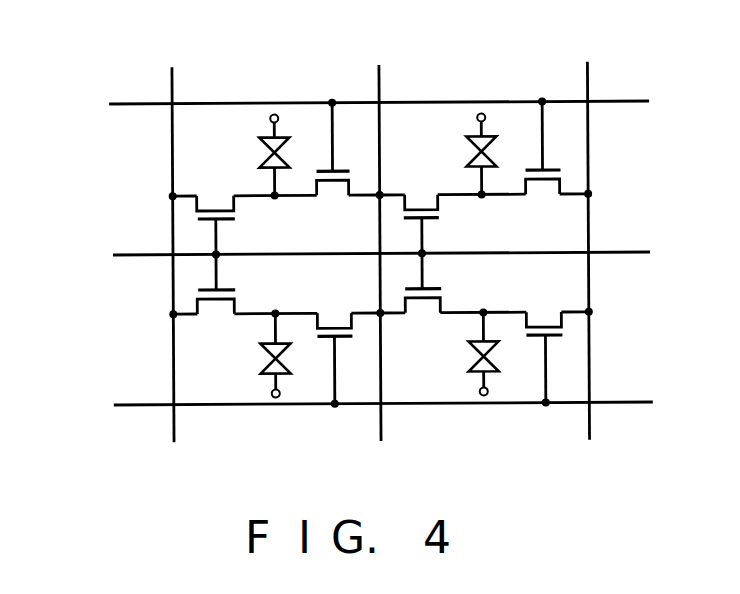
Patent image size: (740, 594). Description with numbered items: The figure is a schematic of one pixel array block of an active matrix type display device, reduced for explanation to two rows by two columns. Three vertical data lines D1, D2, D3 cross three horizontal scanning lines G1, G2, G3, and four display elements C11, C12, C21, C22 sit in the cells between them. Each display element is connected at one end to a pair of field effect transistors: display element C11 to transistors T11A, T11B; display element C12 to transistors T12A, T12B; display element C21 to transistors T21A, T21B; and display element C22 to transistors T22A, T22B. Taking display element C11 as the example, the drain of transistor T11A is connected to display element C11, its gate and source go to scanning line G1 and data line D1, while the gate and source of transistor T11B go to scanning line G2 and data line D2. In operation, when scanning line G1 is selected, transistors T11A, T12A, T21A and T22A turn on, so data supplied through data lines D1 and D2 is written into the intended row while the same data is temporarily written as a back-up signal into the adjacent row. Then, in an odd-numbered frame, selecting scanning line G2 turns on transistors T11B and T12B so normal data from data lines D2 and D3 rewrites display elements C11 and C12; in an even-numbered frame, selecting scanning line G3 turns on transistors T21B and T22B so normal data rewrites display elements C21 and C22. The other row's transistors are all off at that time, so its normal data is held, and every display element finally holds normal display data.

The data line D1 is at (170, 239).
The data line D2 is at (375, 237).
The data line D3 is at (587, 236).
The scanning line G1 is at (355, 255).
The scanning line G2 is at (353, 103).
The scanning line G3 is at (358, 407).
The field effect transistor T11A is at (243, 225).
The field effect transistor T11B is at (340, 167).
The field effect transistor T12A is at (452, 223).
The field effect transistor T12B is at (547, 164).
The field effect transistor T21A is at (247, 284).
The field effect transistor T21B is at (334, 344).
The field effect transistor T22A is at (456, 283).
The field effect transistor T22B is at (542, 342).
The display element C11 is at (250, 155).
The display element C12 is at (457, 153).
The display element C21 is at (250, 356).
The display element C22 is at (454, 353).